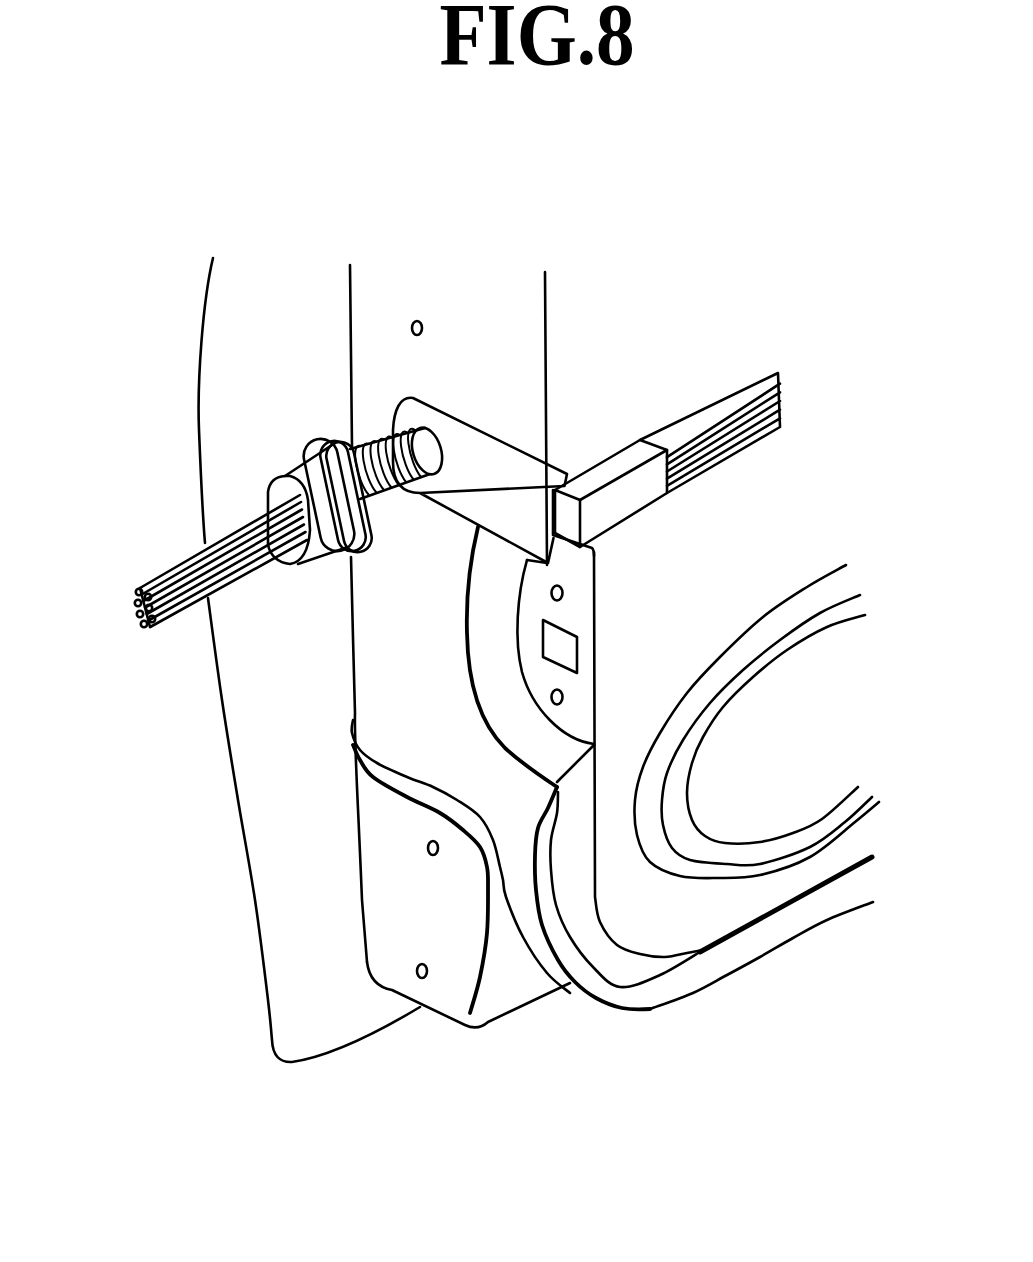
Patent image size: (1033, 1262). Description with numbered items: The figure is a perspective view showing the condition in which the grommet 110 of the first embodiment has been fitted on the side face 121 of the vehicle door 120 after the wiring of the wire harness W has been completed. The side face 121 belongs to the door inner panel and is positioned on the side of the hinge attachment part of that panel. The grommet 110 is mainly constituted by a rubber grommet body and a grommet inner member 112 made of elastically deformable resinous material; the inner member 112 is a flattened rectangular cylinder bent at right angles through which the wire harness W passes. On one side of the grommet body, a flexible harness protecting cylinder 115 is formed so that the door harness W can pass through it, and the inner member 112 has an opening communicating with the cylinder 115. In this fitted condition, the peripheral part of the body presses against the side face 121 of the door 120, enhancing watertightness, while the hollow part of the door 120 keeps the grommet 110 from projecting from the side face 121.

The wire harness W is at (180, 572).
The harness protecting cylinder 115 is at (378, 445).
The grommet 110 is at (517, 525).
The grommet inner member 112 is at (633, 493).
The side face 121 is at (402, 668).
The vehicle door 120 is at (527, 1012).